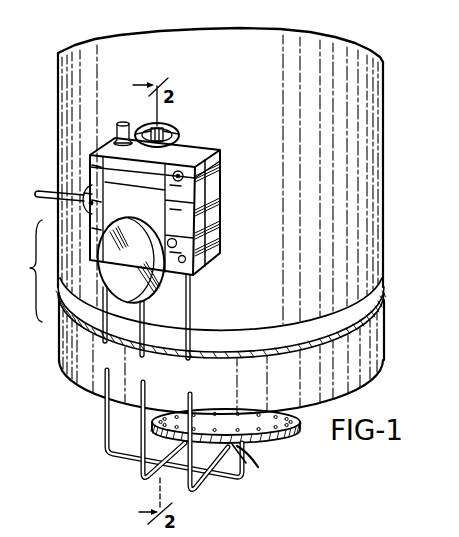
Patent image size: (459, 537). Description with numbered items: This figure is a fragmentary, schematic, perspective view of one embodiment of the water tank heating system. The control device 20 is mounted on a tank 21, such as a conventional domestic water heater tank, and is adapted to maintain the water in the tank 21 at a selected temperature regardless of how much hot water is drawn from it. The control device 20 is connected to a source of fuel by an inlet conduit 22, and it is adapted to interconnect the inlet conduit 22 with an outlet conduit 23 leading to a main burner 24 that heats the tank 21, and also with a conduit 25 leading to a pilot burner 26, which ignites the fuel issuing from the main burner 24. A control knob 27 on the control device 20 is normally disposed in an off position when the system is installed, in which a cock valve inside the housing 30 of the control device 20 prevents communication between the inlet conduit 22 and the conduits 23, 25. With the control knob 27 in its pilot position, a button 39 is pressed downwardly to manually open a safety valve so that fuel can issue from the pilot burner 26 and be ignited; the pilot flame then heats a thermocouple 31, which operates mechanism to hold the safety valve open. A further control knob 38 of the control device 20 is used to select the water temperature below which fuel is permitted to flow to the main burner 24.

The control device 20 is at (235, 130).
The tank 21 is at (376, 136).
The inlet conduit 22 is at (46, 191).
The outlet conduit 23 is at (142, 478).
The main burner 24 is at (267, 434).
The conduit 25 is at (192, 490).
The pilot burner 26 is at (246, 462).
The control knob 27 is at (173, 125).
The housing 30 is at (222, 196).
The thermocouple 31 is at (255, 448).
The control knob 38 is at (164, 294).
The button 39 is at (121, 122).